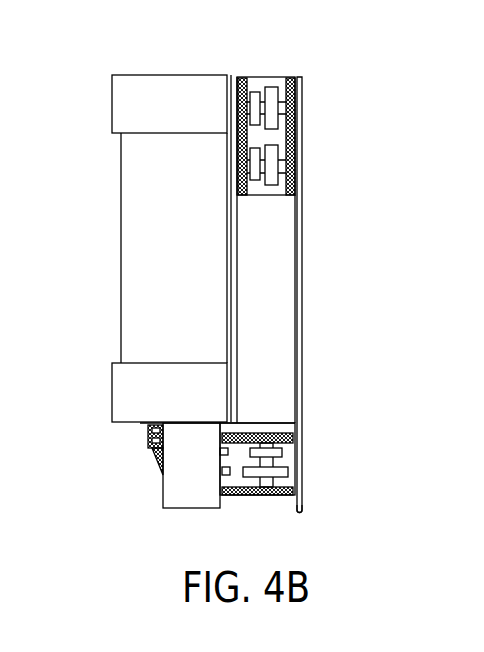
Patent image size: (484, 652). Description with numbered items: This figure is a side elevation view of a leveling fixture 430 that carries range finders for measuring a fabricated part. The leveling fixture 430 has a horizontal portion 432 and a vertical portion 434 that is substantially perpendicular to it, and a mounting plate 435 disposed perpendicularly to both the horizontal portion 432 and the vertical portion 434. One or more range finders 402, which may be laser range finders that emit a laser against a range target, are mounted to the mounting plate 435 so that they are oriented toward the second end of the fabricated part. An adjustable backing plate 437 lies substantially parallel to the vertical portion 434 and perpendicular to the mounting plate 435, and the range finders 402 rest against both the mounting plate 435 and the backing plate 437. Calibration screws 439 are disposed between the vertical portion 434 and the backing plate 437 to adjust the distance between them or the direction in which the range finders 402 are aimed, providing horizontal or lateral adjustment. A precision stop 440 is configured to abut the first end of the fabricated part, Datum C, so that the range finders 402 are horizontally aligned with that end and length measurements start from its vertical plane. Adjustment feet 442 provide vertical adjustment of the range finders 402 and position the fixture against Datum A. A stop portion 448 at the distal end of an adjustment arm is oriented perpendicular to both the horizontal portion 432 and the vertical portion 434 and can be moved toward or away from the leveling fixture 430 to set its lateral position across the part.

The range finder 402 is at (140, 93).
The leveling fixture 430 is at (333, 105).
The horizontal portion 432 is at (157, 422).
The vertical portion 434 is at (302, 262).
The mounting plate 435 is at (140, 257).
The adjustable backing plate 437 is at (238, 238).
The calibration screws 439 is at (260, 102).
The precision stop 440 is at (298, 515).
The adjustment feet 442 is at (293, 468).
The stop portion 448 is at (173, 500).